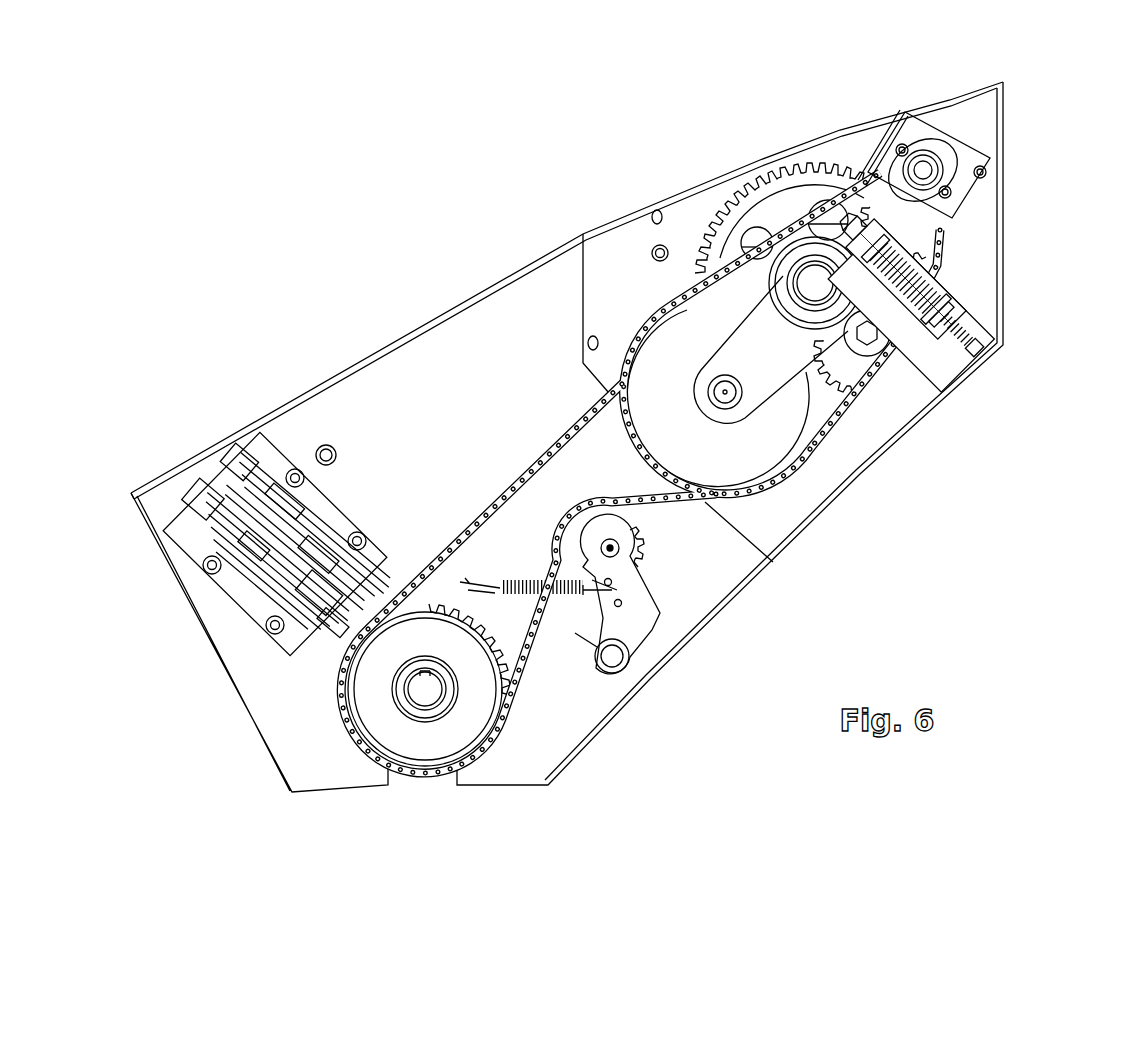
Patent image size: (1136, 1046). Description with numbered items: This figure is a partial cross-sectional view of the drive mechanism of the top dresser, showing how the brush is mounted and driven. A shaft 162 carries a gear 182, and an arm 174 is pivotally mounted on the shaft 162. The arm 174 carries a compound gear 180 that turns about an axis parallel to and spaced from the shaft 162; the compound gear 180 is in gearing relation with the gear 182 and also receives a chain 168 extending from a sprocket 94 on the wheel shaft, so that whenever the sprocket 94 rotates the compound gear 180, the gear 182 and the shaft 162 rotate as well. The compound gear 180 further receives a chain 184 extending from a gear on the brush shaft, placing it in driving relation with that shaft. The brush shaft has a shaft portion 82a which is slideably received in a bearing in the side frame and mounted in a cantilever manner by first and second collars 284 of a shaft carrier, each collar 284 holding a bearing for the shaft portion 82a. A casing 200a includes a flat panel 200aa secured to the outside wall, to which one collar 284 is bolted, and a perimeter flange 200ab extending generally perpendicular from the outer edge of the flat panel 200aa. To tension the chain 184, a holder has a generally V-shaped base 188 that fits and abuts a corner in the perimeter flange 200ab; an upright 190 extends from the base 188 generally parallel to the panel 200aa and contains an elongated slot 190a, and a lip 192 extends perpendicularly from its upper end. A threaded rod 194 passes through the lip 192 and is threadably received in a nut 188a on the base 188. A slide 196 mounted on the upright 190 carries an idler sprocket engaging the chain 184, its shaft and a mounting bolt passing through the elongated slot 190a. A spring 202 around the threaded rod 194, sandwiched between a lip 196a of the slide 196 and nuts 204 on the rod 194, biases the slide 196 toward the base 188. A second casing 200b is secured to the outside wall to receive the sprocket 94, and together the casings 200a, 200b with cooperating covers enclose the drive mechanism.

The shaft portion 82a is at (923, 170).
The sprocket 94 is at (412, 733).
The shaft 162 is at (815, 283).
The chain 168 is at (528, 472).
The arm 174 is at (768, 375).
The compound gear 180 is at (767, 433).
The gear 182 is at (723, 217).
The chain 184 is at (853, 400).
The base 188 is at (906, 279).
The nut 188a is at (911, 309).
The upright 190 is at (875, 248).
The elongated slot 190a is at (941, 314).
The lip 192 is at (852, 225).
The threaded rod 194 is at (957, 330).
The slide 196 is at (905, 278).
The lip 196a is at (974, 347).
The casing 200a is at (773, 562).
The flat panel 200aa is at (613, 303).
The perimeter flange 200ab is at (588, 233).
The casing 200b is at (276, 415).
The spring 202 is at (936, 309).
The nuts 204 is at (912, 277).
The collars 284 is at (933, 140).